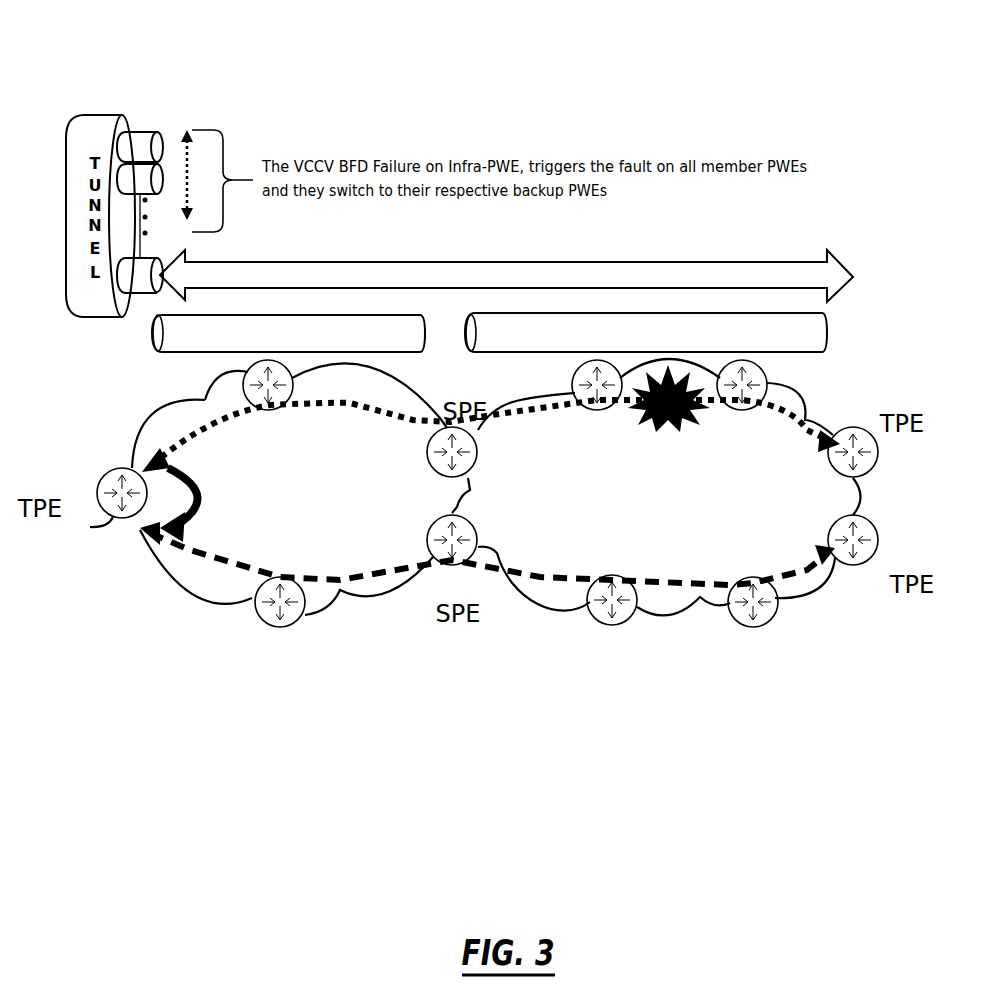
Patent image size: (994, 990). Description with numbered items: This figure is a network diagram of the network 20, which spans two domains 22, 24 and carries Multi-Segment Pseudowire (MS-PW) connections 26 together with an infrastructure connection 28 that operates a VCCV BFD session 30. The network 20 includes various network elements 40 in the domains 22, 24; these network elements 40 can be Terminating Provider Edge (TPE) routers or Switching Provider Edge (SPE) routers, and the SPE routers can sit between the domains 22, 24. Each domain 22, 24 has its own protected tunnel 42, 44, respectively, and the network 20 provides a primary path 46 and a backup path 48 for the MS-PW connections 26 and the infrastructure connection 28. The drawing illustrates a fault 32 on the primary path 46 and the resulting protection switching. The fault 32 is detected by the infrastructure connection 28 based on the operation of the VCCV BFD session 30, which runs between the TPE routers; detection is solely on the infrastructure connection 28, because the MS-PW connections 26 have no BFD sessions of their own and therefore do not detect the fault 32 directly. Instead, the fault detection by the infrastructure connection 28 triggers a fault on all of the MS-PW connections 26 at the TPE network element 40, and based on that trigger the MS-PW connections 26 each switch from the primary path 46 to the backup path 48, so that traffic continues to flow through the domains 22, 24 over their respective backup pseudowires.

The network 20 is at (512, 50).
The domain 22 is at (283, 493).
The domain 24 is at (678, 493).
The Multi-Segment Pseudowires (MS-PW) connections 26 is at (176, 120).
The infrastructure connection 28 is at (157, 257).
The VCCV BFD session 30 is at (530, 262).
The fault 32 is at (645, 425).
The network element 40 is at (112, 518).
The protected tunnel 42 is at (367, 315).
The protected tunnel 44 is at (700, 313).
The primary path 46 is at (410, 420).
The backup path 48 is at (225, 565).